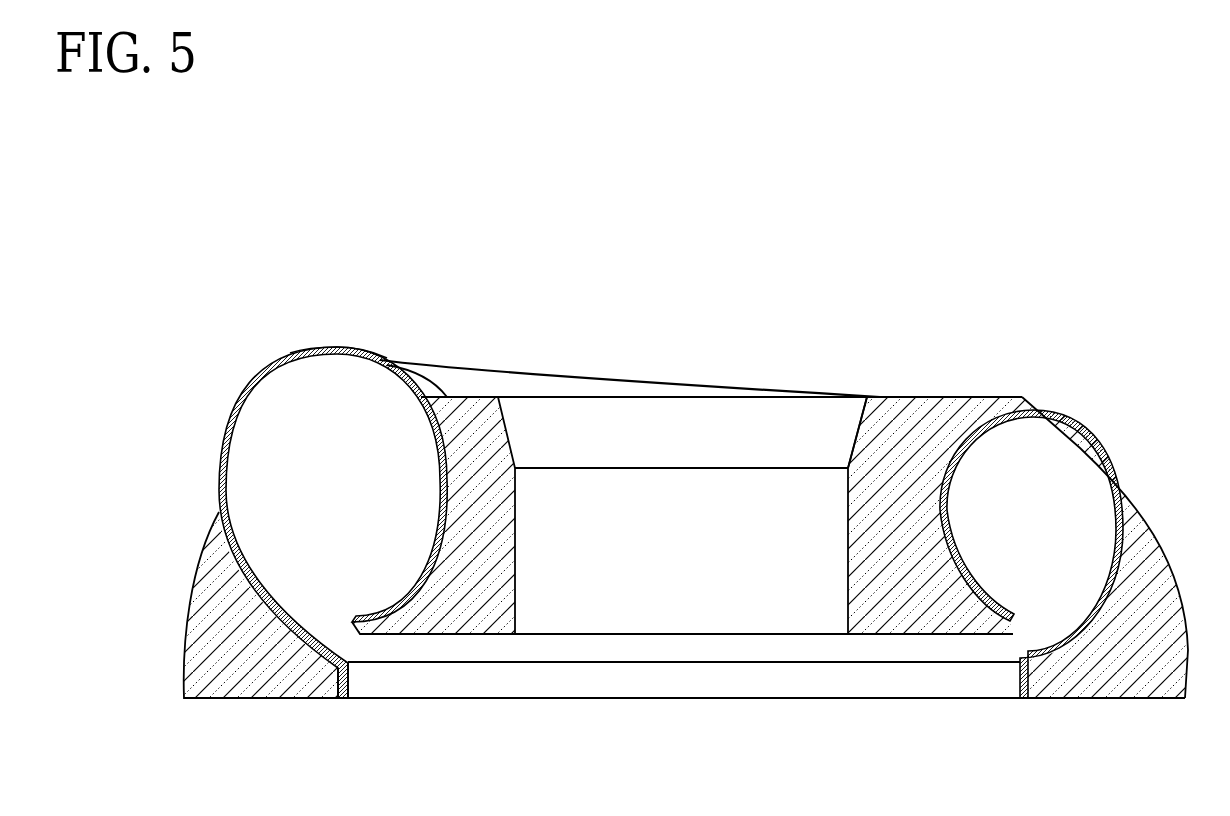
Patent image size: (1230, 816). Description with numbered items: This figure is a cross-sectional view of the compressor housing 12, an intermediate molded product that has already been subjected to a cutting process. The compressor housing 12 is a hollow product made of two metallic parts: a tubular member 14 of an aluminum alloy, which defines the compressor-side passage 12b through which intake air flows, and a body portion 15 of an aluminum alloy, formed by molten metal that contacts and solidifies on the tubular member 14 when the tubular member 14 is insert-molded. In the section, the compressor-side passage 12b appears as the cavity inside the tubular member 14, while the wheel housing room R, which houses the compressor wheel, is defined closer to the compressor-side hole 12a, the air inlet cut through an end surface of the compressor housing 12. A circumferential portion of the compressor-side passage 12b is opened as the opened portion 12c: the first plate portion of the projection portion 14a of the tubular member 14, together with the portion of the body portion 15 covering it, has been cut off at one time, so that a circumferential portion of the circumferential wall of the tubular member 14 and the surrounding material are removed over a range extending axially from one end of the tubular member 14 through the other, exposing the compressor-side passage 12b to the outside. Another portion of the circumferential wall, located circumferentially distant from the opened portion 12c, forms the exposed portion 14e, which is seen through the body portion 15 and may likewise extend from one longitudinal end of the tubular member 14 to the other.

The compressor housing 12 is at (937, 397).
The compressor-side hole 12a is at (845, 422).
The compressor-side passage 12b is at (1052, 547).
The opened portion 12c is at (330, 655).
The tubular member 14 is at (237, 412).
The projection portion 14a is at (330, 688).
The exposed portion 14e is at (310, 348).
The body portion 15 is at (603, 380).
The wheel housing room R is at (701, 560).